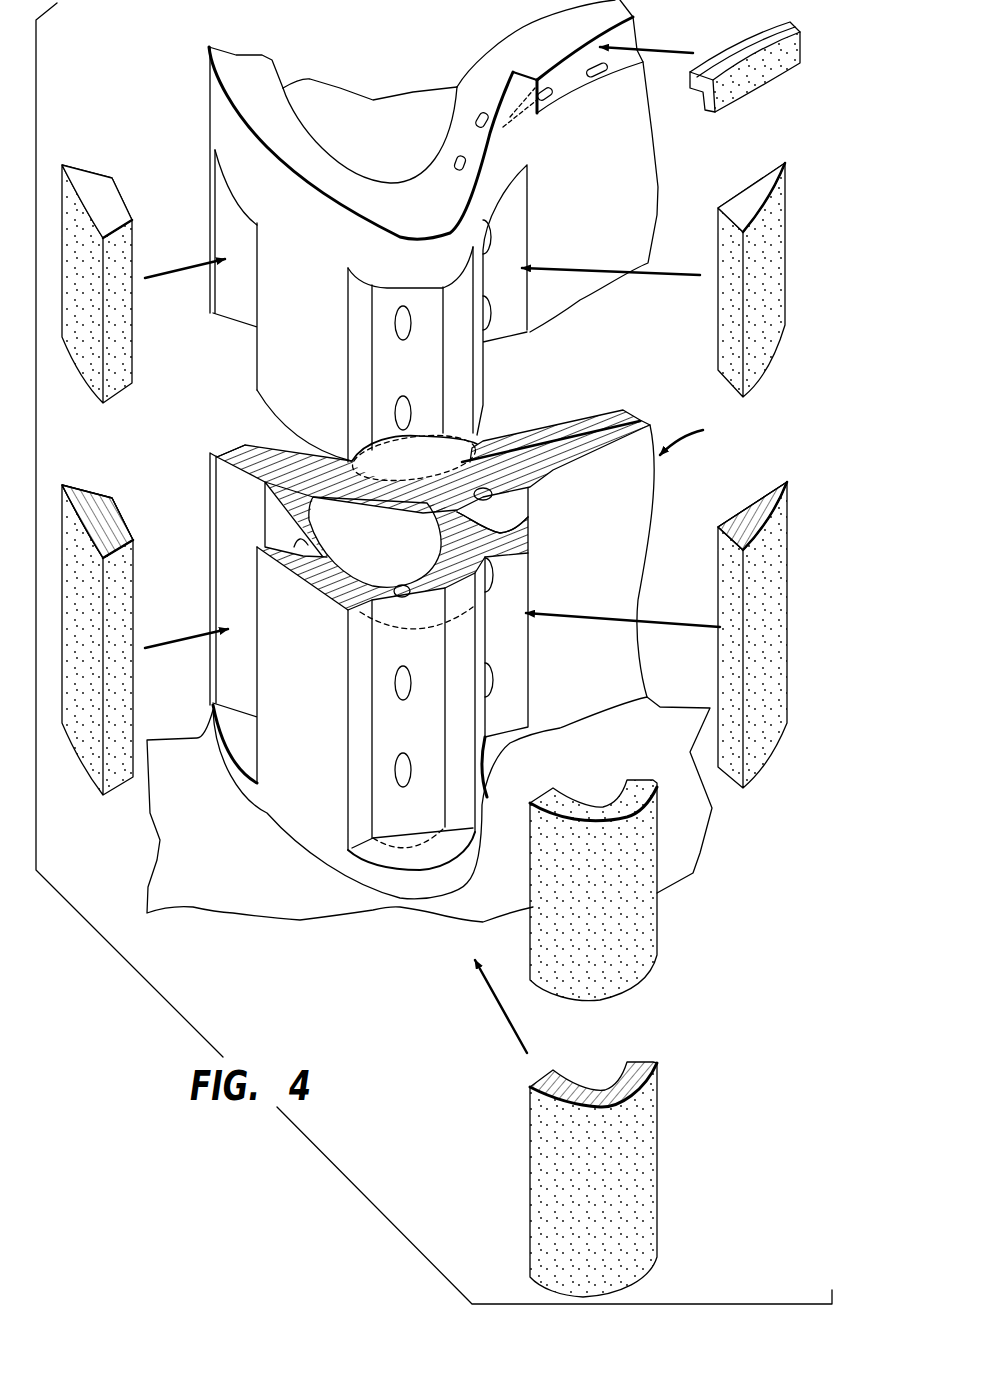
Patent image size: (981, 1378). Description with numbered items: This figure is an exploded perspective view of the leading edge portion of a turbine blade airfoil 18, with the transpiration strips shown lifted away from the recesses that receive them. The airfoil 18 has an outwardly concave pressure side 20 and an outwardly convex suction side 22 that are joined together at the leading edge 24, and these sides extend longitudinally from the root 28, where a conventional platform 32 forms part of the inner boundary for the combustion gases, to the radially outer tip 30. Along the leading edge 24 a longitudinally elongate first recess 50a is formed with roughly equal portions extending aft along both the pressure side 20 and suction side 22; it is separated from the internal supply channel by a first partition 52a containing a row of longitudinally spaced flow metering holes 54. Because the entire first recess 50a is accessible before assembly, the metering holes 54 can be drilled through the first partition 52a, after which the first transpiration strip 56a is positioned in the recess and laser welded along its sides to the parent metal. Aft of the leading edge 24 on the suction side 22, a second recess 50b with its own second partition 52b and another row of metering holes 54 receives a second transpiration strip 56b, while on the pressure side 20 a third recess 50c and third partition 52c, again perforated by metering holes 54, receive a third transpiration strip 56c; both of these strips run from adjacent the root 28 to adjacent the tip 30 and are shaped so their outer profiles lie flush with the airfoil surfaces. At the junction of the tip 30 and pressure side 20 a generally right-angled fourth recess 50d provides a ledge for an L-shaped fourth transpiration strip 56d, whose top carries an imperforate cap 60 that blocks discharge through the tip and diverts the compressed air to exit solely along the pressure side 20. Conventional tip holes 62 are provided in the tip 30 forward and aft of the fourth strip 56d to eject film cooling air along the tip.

The airfoil 18 is at (696, 436).
The pressure side 20 is at (618, 576).
The suction side 22 is at (208, 480).
The leading edge 24 is at (425, 887).
The root 28 is at (523, 770).
The tip 30 is at (297, 157).
The platform 32 is at (659, 756).
The first recess 50a is at (365, 735).
The second recess 50b is at (232, 222).
The third recess 50c is at (510, 673).
The fourth recess 50d is at (638, 40).
The first partition 52a is at (400, 803).
The second partition 52b is at (277, 525).
The third partition 52c is at (530, 515).
The flow metering holes 54 is at (400, 327).
The first transpiration strip 56a is at (660, 957).
The second transpiration strip 56b is at (73, 363).
The third transpiration strip 56c is at (767, 357).
The fourth transpiration strip 56d is at (742, 78).
The imperforate cap 60 is at (750, 45).
The tip holes 62 is at (457, 157).